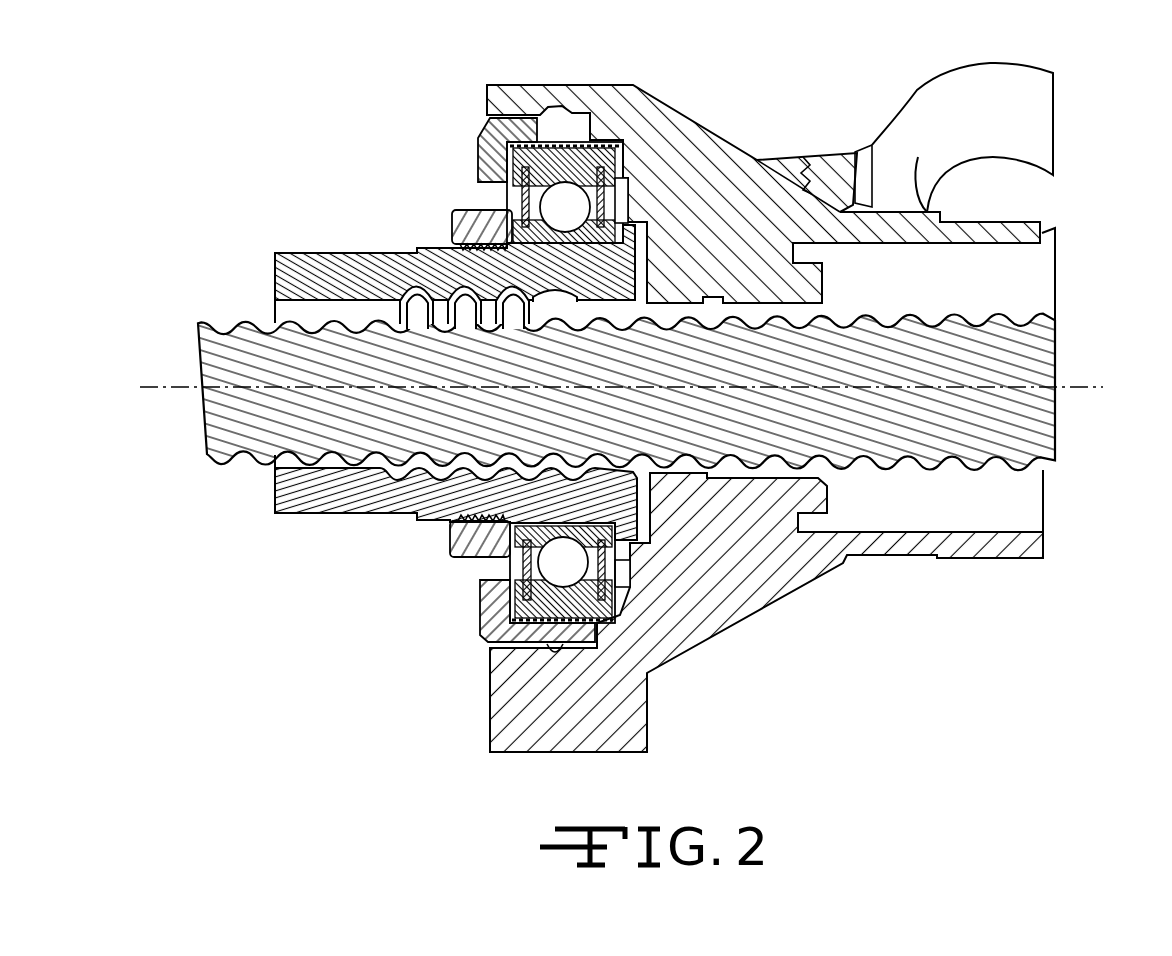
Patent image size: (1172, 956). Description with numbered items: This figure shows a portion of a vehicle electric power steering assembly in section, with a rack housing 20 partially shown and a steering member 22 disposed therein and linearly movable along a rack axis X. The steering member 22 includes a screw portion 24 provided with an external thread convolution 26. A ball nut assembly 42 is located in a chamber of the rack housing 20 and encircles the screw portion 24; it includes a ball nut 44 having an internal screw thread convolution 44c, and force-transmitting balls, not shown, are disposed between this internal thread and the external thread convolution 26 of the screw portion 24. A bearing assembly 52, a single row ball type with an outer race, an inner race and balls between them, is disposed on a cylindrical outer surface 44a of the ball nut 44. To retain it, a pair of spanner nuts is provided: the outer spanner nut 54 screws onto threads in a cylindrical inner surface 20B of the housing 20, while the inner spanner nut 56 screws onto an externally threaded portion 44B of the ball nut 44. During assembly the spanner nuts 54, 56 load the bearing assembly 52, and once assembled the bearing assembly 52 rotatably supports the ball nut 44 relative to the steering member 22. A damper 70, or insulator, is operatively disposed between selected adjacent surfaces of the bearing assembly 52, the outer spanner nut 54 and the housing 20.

The rack housing 20 is at (716, 654).
The cylindrical inner surface 20B is at (490, 652).
The steering member 22 is at (1068, 333).
The screw portion 24 is at (1040, 423).
The external thread convolution 26 is at (510, 455).
The ball nut assembly 42 is at (337, 241).
The ball nut 44 is at (275, 515).
The cylindrical outer surface 44a is at (577, 247).
The externally threaded portion 44B is at (428, 504).
The internal screw thread convolution 44c is at (510, 292).
The bearing assembly 52 is at (642, 174).
The outer spanner nut 54 is at (486, 141).
The inner spanner nut 56 is at (453, 213).
The damper 70 is at (613, 128).
The rack axis X is at (1090, 387).